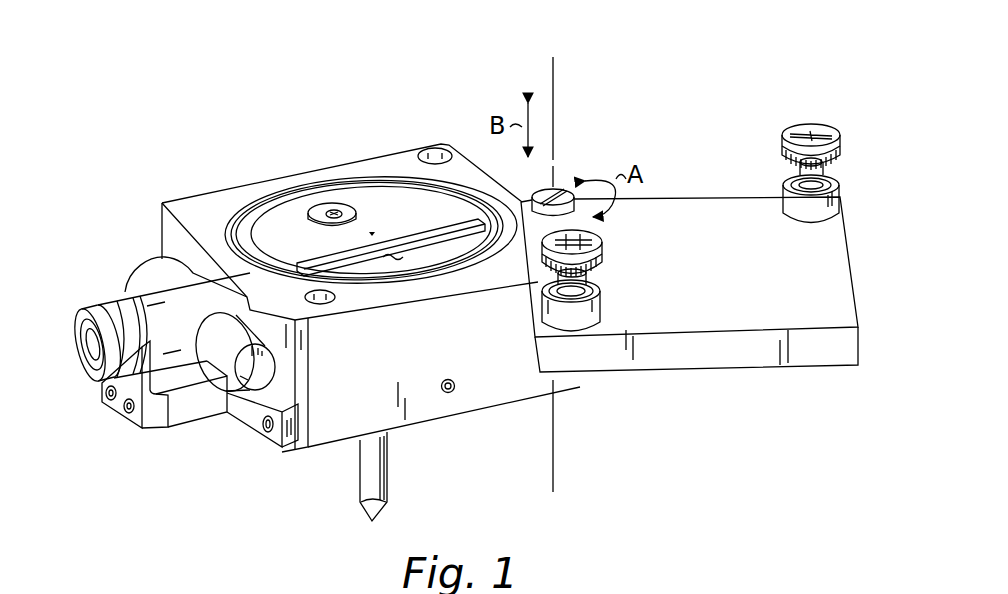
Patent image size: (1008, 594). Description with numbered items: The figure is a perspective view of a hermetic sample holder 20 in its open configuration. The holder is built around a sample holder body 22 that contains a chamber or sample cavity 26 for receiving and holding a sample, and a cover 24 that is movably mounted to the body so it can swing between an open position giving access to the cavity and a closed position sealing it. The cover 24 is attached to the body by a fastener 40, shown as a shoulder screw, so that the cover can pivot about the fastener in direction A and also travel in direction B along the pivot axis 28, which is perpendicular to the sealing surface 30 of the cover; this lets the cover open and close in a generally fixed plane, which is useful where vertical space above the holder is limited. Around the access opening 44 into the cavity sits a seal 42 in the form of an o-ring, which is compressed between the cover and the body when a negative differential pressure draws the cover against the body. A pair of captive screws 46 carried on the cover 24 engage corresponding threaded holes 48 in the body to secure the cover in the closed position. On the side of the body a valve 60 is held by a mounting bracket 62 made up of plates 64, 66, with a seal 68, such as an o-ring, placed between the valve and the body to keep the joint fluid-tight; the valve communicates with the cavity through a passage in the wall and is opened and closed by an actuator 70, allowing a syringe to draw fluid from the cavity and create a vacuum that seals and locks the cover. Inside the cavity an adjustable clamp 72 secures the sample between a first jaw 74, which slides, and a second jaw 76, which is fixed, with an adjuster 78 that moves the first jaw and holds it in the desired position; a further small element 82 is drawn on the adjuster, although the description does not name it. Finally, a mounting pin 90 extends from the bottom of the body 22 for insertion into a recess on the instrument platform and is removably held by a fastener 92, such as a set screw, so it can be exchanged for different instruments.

The hermetic sample holder 20 is at (409, 452).
The sample holder body 22 is at (202, 198).
The cover 24 is at (692, 196).
The sample cavity 26 is at (388, 262).
The pivot axis 28 is at (553, 72).
The sealing surface 30 is at (667, 372).
The fastener 40 is at (570, 188).
The seal 42 is at (266, 190).
The access opening 44 is at (462, 203).
The captive screws 46 is at (602, 253).
The threaded holes 48 is at (437, 148).
The valve 60 is at (147, 303).
The mounting bracket 62 is at (108, 412).
The plate 64 is at (155, 422).
The plate 66 is at (188, 408).
The seal 68 is at (190, 270).
The actuator 70 is at (246, 382).
The adjustable clamp 72 is at (340, 196).
The first jaw 74 is at (374, 236).
The second jaw 76 is at (433, 258).
The adjuster 78 is at (332, 202).
The screw 82 is at (312, 212).
The mounting pin 90 is at (366, 478).
The fastener 92 is at (450, 393).